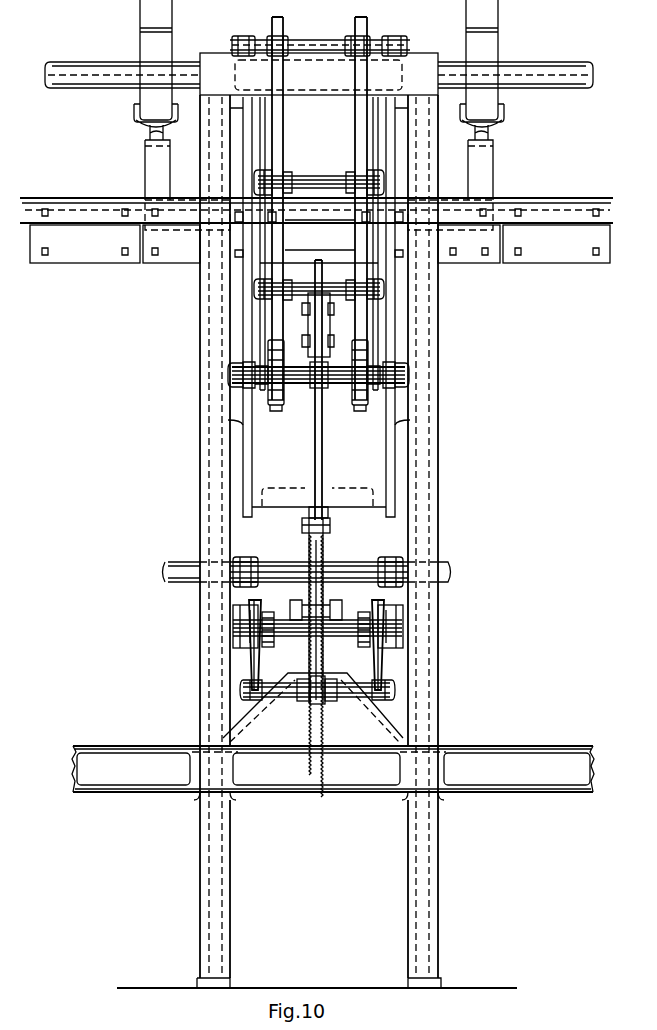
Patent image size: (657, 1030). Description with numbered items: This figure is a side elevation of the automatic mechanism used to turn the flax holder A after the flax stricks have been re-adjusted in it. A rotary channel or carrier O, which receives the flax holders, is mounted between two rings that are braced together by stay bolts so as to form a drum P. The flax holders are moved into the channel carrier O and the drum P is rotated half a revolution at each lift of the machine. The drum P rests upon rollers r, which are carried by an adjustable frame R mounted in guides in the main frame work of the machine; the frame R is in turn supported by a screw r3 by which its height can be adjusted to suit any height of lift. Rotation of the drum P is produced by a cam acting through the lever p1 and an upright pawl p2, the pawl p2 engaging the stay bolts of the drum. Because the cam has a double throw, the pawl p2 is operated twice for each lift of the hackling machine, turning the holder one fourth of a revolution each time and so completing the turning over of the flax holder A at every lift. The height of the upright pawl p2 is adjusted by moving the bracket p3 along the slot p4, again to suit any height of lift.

The flax holder A is at (316, 229).
The rotary channel or carrier O is at (319, 245).
The drum P is at (280, 151).
The lever p1 is at (282, 33).
The upright pawl p2 is at (318, 427).
The bracket p3 is at (327, 325).
The slot p4 is at (308, 552).
The rollers r is at (296, 306).
The screw r3 is at (327, 555).
The adjustable frame R is at (333, 520).